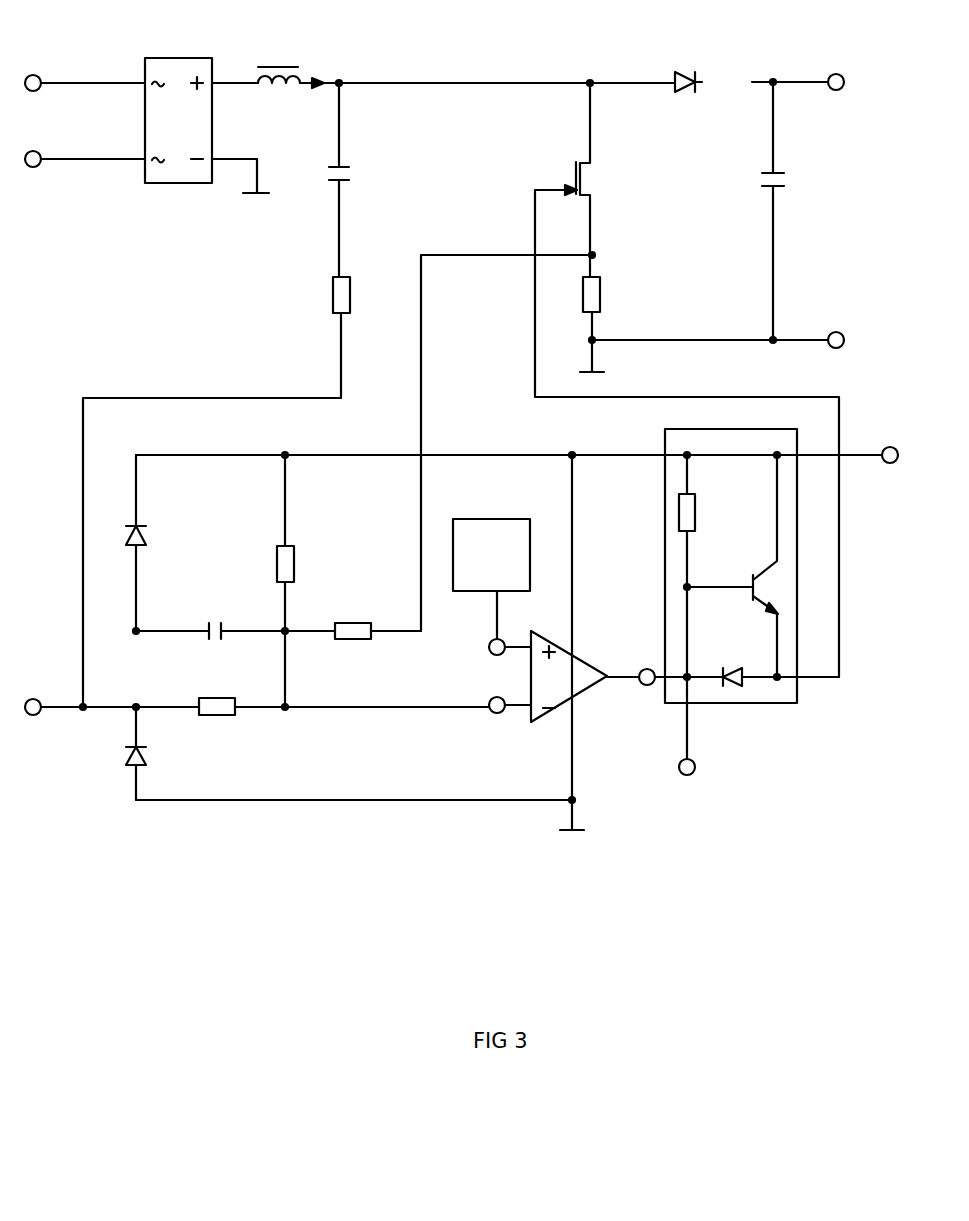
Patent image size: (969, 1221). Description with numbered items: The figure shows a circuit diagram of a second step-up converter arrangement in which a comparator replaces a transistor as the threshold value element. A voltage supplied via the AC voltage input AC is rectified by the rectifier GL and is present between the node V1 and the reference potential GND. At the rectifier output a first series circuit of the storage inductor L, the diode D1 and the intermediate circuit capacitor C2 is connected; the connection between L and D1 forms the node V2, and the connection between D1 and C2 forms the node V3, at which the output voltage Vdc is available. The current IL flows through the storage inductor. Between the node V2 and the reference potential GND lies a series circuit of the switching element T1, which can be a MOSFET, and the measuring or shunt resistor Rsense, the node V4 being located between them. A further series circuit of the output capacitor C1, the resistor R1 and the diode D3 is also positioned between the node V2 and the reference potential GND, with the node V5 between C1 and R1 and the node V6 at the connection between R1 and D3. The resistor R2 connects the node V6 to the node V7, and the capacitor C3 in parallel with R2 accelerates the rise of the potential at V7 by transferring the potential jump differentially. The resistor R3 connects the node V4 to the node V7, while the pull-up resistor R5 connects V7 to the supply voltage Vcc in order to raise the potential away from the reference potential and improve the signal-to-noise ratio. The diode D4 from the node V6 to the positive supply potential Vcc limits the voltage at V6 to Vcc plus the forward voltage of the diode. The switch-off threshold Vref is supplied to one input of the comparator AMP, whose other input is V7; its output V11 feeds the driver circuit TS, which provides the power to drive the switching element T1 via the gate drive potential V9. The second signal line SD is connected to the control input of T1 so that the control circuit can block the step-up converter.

The AC voltage input AC is at (81, 121).
The rectifier GL is at (207, 125).
The storage inductor L is at (279, 61).
The node V1 is at (235, 70).
The current IL is at (445, 72).
The node V2 is at (497, 66).
The diode D1 is at (646, 68).
The node V3 is at (790, 67).
The DC output terminal Vdc is at (861, 84).
The intermediate circuit capacitor C2 is at (792, 211).
The reference potential GND is at (748, 342).
The output capacitor C1 is at (354, 180).
The capacitor node voltage V5 is at (318, 238).
The resistor R1 is at (233, 492).
The switching element T1 is at (687, 380).
The node V4 is at (525, 437).
The measuring or shunt resistor Rsense is at (630, 324).
The supply voltage Vcc is at (524, 471).
The diode D4 is at (156, 543).
The diode D3 is at (156, 753).
The pull-up resistor R5 is at (302, 581).
The capacitor C3 is at (234, 616).
The resistor R3 is at (378, 616).
The node V6 is at (112, 722).
The resistor R2 is at (217, 692).
The node V7 is at (362, 725).
The switch-off threshold Vref is at (492, 587).
The comparator AMP is at (548, 676).
The amplifier output V11 is at (665, 664).
The driver circuit TS is at (731, 594).
The gate drive voltage V9 is at (808, 690).
The second signal line SD is at (688, 786).